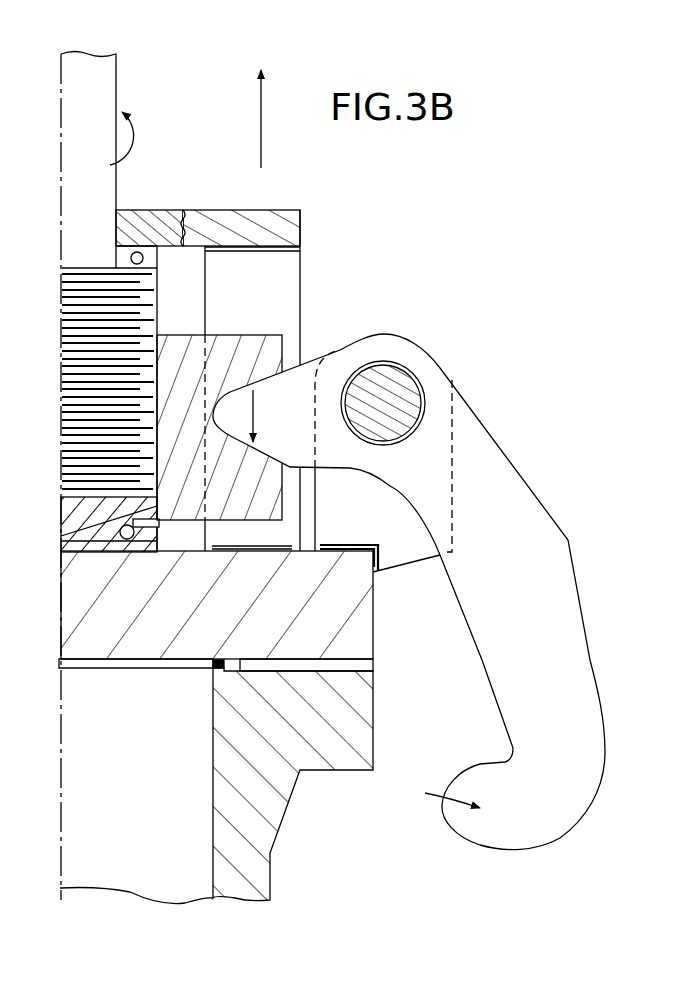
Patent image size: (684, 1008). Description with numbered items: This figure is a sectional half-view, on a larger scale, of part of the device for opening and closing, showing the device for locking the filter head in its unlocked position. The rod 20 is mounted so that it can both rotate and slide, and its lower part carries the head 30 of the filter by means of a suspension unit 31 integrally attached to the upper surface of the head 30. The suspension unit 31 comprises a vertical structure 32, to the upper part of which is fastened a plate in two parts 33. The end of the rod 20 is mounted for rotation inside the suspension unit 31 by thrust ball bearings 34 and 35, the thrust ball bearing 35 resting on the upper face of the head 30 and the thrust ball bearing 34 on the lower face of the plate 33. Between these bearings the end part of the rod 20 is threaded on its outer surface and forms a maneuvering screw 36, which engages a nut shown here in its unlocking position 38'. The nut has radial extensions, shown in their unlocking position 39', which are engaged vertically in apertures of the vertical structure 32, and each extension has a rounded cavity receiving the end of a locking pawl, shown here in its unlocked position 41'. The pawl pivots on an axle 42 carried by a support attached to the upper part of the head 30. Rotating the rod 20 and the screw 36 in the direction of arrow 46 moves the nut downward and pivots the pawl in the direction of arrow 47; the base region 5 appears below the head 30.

The base 5 is at (262, 873).
The rod 20 is at (116, 80).
The head 30 is at (360, 634).
The suspension unit 31 is at (237, 203).
The vertical structure 32 is at (292, 278).
The plate in two parts 33 is at (292, 232).
The thrust ball bearing 34 is at (145, 259).
The thrust ball bearing 35 is at (62, 552).
The maneuvering screw 36 is at (70, 350).
The nut 38' is at (219, 408).
The radial extensions 39' is at (258, 482).
The locking pawl 41' is at (427, 592).
The axle 42 is at (400, 388).
The arrow 46 is at (132, 137).
The arrow 47 is at (460, 812).